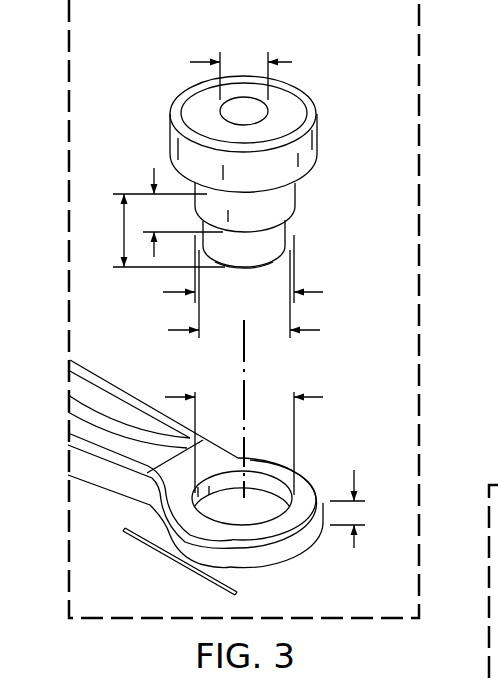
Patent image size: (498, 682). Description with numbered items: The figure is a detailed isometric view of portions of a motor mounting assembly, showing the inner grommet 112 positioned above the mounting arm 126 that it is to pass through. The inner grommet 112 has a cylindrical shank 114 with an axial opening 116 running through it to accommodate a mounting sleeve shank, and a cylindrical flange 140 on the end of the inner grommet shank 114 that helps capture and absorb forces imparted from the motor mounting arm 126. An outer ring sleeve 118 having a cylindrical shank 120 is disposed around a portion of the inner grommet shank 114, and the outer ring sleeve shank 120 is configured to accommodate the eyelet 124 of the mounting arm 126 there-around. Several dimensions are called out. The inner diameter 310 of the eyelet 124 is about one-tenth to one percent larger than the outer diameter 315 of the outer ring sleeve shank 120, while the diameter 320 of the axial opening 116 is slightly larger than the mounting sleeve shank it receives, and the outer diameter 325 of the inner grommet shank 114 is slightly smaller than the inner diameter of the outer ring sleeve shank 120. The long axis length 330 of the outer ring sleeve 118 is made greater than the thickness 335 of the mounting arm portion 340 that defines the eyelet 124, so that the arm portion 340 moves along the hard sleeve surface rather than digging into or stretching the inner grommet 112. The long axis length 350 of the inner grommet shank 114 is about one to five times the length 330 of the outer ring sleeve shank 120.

The inner grommet 112 is at (279, 166).
The inner grommet shank 114 is at (247, 268).
The axial opening 116 is at (242, 103).
The outer ring sleeve 118 is at (297, 205).
The outer ring sleeve shank 120 is at (297, 191).
The eyelet 124 is at (258, 524).
The mounting arm 126 is at (195, 470).
The cylindrical flange 140 is at (276, 104).
The inner diameter of the eyelet opening 310 is at (323, 397).
The outer diameter of the outer ring sleeve shank 315 is at (323, 292).
The diameter of the axial opening 320 is at (190, 62).
The outer diameter of the inner grommet shank 325 is at (320, 330).
The long axis length of the outer ring sleeve 330 is at (153, 168).
The thickness of mounting arm portion 335 is at (354, 548).
The mounting arm portion 340 is at (180, 560).
The long axis length of the inner grommet shank 350 is at (118, 216).